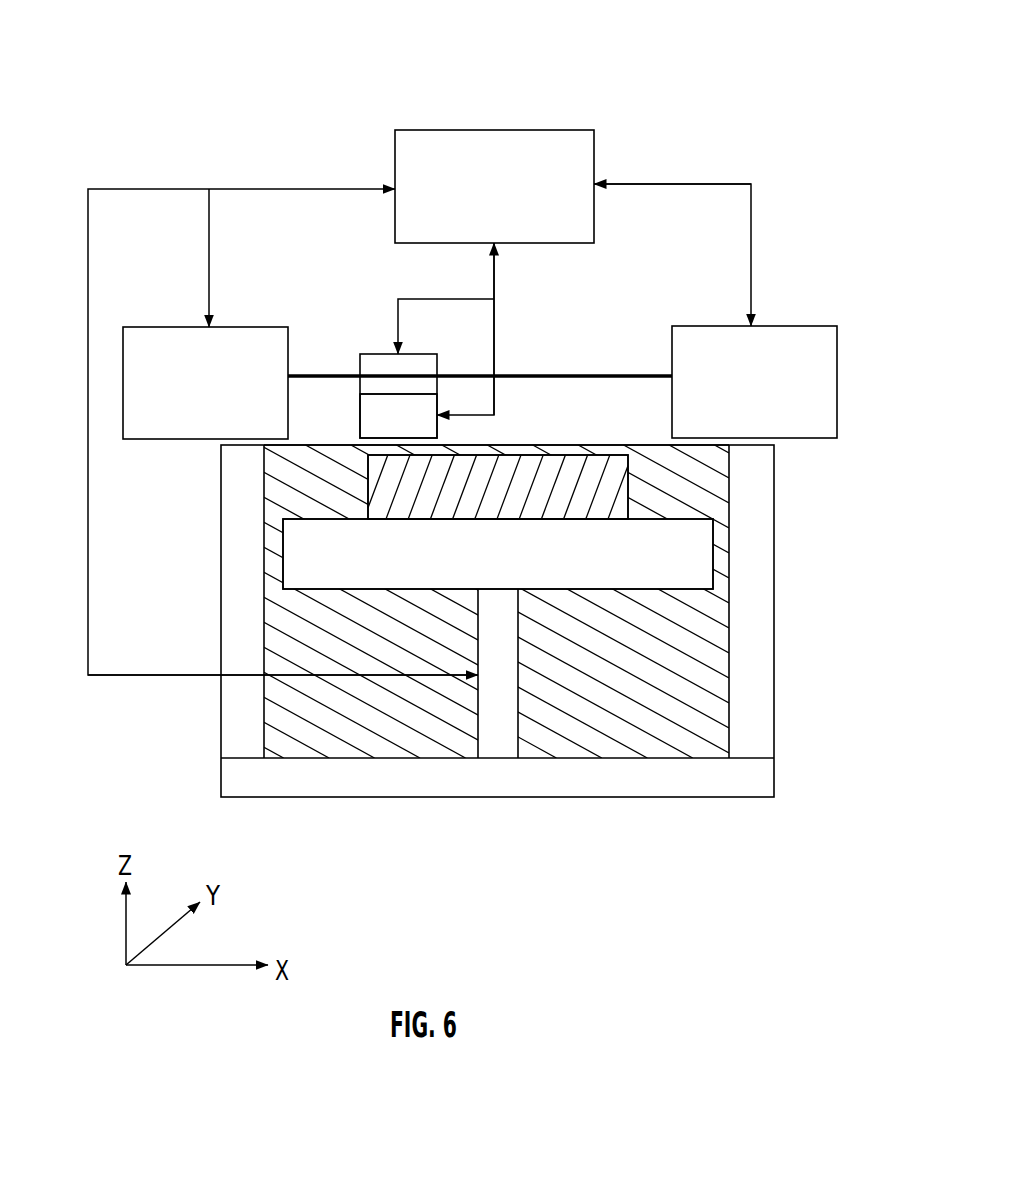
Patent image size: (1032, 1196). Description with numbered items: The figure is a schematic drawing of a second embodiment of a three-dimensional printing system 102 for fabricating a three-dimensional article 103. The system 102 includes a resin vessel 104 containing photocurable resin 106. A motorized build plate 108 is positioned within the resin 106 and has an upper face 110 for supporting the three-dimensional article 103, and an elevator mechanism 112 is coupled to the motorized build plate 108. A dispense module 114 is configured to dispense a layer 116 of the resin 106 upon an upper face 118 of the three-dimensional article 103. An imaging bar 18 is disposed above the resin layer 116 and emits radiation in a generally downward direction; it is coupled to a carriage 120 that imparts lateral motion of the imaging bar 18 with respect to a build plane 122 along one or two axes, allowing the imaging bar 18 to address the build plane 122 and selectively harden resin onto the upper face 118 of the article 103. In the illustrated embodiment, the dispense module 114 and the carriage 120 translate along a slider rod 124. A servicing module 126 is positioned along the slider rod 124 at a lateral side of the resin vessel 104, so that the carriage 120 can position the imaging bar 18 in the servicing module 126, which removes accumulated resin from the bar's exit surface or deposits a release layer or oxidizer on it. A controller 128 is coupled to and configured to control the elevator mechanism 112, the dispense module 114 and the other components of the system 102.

The three-dimensional printing system 102 is at (605, 85).
The controller 128 is at (477, 130).
The servicing module 126 is at (166, 327).
The slider rod 124 is at (317, 375).
The carriage 120 is at (380, 354).
The imaging bar 18 is at (437, 402).
The dispense module 114 is at (792, 326).
The upper face of the three-dimensional article 118 is at (510, 419).
The build plane 122 is at (533, 456).
The resin layer 116 is at (580, 445).
The three-dimensional article 103 is at (617, 490).
The motorized build plate 108 is at (281, 557).
The photocurable resin 106 is at (705, 637).
The upper face of the motorized build plate 110 is at (327, 522).
The resin vessel 104 is at (758, 705).
The elevator mechanism 112 is at (492, 713).